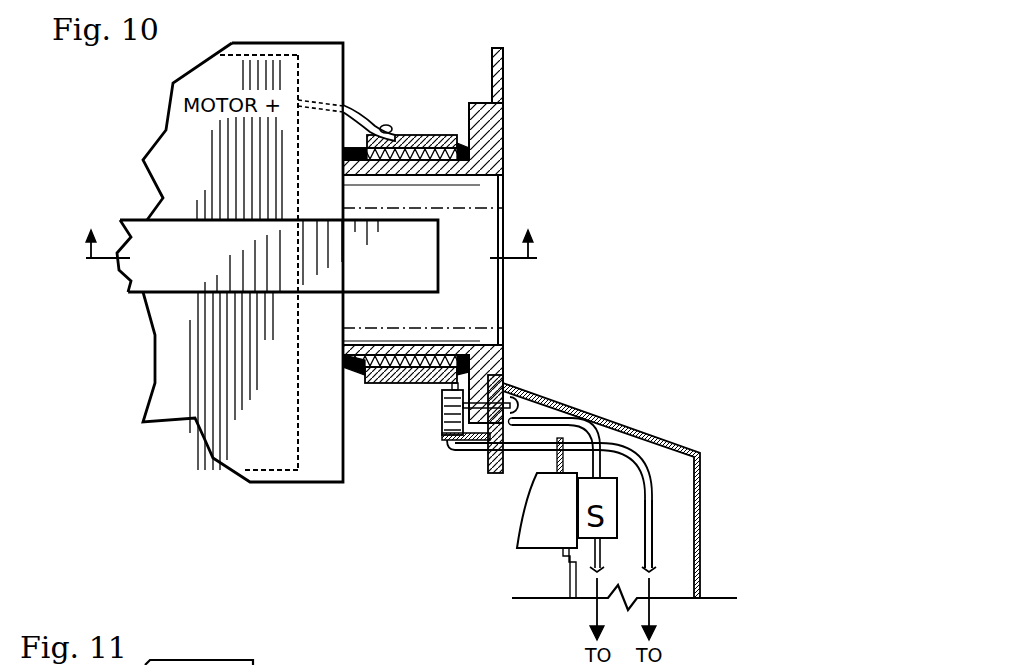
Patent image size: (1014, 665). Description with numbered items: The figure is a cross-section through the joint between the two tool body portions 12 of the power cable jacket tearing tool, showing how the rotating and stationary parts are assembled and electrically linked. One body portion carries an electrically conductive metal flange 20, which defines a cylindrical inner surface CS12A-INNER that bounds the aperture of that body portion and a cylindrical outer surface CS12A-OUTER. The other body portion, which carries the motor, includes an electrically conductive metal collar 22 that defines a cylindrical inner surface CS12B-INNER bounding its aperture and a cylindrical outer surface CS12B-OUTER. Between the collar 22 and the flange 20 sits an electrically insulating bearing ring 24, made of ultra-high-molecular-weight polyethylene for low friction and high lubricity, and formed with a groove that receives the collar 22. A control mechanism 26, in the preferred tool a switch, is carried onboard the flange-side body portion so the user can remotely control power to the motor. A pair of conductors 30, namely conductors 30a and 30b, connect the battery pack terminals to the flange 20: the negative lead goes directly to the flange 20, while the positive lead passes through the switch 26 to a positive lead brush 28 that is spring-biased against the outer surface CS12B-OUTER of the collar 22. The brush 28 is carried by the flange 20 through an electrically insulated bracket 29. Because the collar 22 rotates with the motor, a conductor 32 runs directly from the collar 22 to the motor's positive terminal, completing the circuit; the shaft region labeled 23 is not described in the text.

The tool body portions 12 is at (310, 231).
The flange 20 is at (498, 123).
The collar 22 is at (410, 137).
The motor shaft 23 is at (385, 279).
The bearing ring 24 is at (368, 384).
The control mechanism 26 is at (510, 522).
The positive lead brush 28 is at (434, 392).
The bracket 29 is at (487, 459).
The conductors 30 is at (666, 515).
The conductor 30a is at (633, 450).
The conductor 30b is at (580, 450).
The conductor 32 is at (353, 110).
The cylindrical outer surface CS12A-OUTER is at (418, 152).
The cylindrical inner surface CS12A-INNER is at (472, 174).
The cylindrical inner surface CS12B-INNER is at (437, 365).
The cylindrical outer surface CS12B-OUTER is at (390, 384).